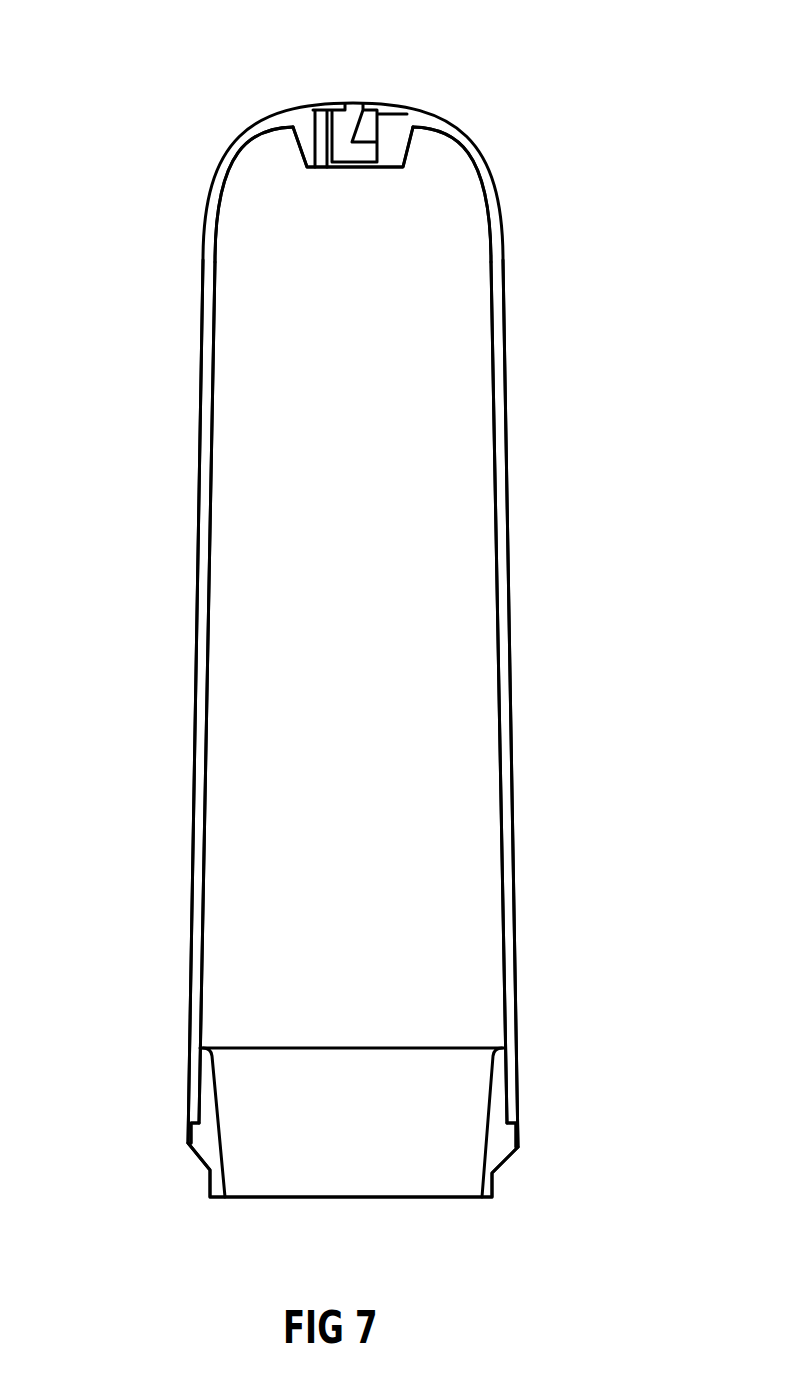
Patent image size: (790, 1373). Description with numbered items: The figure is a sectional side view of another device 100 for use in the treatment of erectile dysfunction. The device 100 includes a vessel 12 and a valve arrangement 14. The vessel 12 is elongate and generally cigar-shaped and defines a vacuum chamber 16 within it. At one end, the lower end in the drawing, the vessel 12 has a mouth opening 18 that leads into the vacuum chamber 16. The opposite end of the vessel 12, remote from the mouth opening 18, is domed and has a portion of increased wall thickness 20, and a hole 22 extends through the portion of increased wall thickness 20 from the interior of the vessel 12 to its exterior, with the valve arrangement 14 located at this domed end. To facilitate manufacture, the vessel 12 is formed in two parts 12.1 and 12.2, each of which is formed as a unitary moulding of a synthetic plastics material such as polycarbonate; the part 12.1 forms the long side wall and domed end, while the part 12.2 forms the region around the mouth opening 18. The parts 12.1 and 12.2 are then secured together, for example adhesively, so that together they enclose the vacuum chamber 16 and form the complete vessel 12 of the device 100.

The device 100 is at (186, 141).
The vessel 12 is at (583, 470).
The part 12.1 is at (511, 635).
The part 12.2 is at (492, 1150).
The valve arrangement 14 is at (398, 89).
The vacuum chamber 16 is at (458, 738).
The mouth opening 18 is at (270, 1180).
The portion of increased wall thickness 20 is at (262, 174).
The hole 22 is at (319, 181).